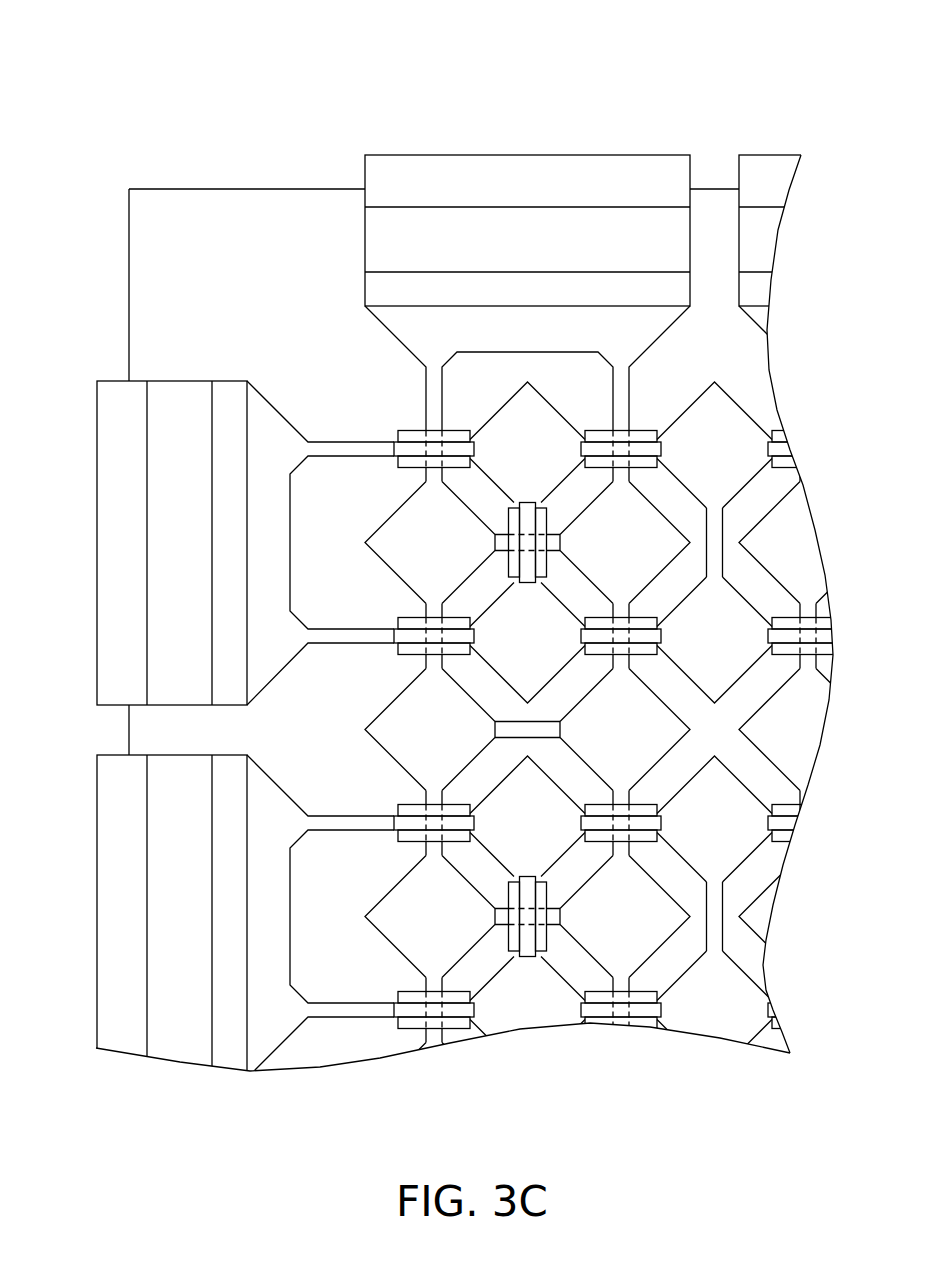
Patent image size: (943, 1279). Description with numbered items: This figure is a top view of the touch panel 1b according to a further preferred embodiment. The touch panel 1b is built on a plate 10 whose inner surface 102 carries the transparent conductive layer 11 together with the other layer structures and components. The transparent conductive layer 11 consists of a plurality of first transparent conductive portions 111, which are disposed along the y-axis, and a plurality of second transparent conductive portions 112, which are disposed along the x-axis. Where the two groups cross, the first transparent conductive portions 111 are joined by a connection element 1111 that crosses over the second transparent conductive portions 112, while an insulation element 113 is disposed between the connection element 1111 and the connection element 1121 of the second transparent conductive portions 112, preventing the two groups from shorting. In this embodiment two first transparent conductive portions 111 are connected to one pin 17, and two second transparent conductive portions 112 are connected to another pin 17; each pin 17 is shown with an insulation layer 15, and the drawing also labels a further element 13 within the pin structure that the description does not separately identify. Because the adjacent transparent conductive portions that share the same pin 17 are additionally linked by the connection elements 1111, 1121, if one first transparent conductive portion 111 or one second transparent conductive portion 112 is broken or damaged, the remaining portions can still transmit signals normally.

The touch panel 1b is at (136, 69).
The plate 10 is at (128, 214).
The inner surface 102 is at (222, 205).
The insulation layer 15 is at (370, 243).
The pin 17 is at (535, 172).
The first conductive layer 13 is at (372, 288).
The connection element 1121 is at (433, 431).
The insulation element 113 is at (473, 438).
The connection element 1111 is at (468, 450).
The first transparent conductive portion 111 is at (607, 943).
The second transparent conductive portion 112 is at (690, 1028).
The transparent conductive layer 11 is at (621, 780).